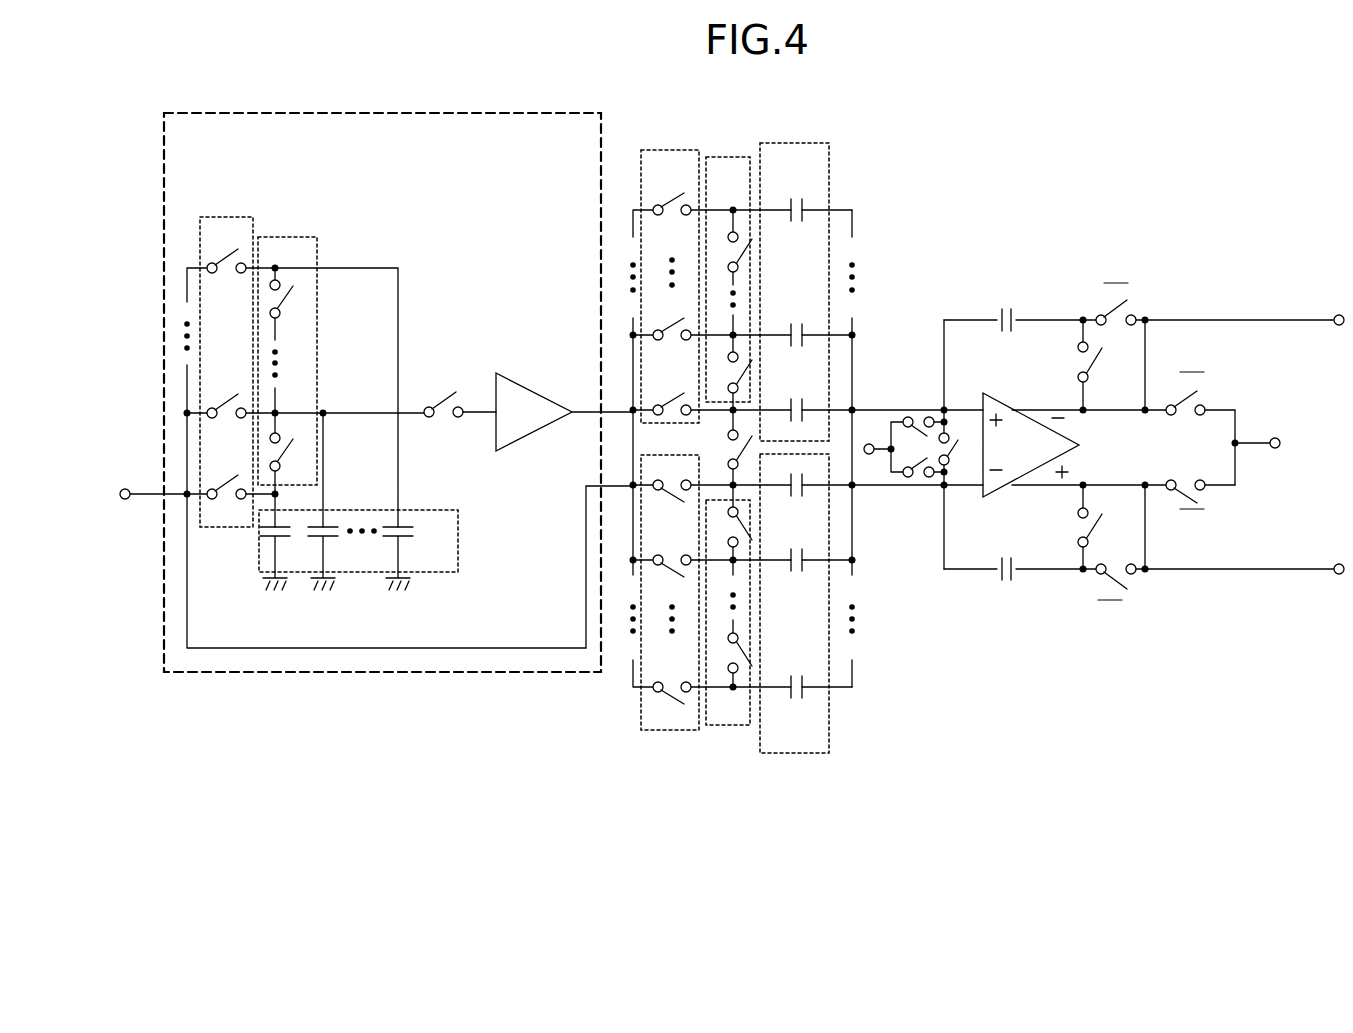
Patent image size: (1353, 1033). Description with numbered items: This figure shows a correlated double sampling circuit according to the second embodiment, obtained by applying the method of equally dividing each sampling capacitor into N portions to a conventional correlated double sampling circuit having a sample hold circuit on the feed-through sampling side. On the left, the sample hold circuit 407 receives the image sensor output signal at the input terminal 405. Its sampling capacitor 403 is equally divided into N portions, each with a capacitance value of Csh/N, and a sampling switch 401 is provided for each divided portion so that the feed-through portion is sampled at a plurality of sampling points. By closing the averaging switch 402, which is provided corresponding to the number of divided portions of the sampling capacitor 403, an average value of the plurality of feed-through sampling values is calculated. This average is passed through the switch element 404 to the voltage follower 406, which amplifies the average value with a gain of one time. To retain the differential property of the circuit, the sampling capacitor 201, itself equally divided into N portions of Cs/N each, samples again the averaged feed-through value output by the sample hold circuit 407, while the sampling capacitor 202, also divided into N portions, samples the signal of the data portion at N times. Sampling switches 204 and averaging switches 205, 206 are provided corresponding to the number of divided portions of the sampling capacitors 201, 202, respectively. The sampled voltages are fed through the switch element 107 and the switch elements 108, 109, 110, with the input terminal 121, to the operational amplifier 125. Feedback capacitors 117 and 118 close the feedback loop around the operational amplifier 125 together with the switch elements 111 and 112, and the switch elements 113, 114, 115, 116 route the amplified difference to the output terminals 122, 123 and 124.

The switch element 107 is at (700, 444).
The switch element 108 is at (917, 415).
The switch element 109 is at (918, 478).
The switch element 110 is at (958, 470).
The switch element 111 is at (1067, 345).
The switch element 112 is at (1072, 548).
The switch element 113 is at (1138, 302).
The switch element 114 is at (1132, 582).
The switch element 115 is at (1211, 394).
The switch element 116 is at (1216, 495).
The feedback capacitor 117 is at (992, 300).
The feedback capacitor 118 is at (997, 582).
The input terminal 121 is at (875, 434).
The output terminal 122 is at (1336, 311).
The output terminal 123 is at (1336, 560).
The output terminal 124 is at (1272, 435).
The operational amplifier 125 is at (985, 385).
The sampling capacitor 201 is at (795, 141).
The sampling capacitor 202 is at (785, 755).
The sampling switch 204 is at (668, 148).
The averaging switch 205 is at (727, 156).
The averaging switch 206 is at (721, 727).
The sampling switch 401 is at (222, 216).
The averaging switch 402 is at (287, 236).
The sampling capacitor 403 is at (460, 540).
The switch element 404 is at (442, 391).
The input terminal 405 is at (125, 490).
The voltage follower 406 is at (526, 385).
The sample hold circuit 407 is at (164, 137).